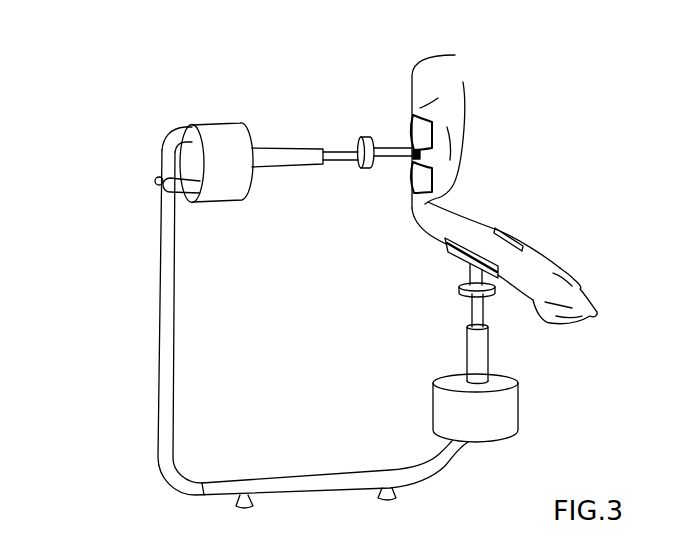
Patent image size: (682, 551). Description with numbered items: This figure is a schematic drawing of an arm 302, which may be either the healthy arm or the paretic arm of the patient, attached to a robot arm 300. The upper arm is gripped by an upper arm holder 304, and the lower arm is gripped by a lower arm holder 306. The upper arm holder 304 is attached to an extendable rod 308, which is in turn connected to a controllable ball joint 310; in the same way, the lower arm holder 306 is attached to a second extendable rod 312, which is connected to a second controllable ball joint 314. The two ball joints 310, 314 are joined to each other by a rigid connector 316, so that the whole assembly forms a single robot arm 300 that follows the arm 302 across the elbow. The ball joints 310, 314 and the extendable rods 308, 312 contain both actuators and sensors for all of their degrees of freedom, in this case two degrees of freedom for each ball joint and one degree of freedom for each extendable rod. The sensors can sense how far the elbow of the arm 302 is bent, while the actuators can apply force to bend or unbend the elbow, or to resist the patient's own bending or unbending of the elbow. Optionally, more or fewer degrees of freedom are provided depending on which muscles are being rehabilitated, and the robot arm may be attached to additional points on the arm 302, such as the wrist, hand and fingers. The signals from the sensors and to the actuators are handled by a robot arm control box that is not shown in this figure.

The robot arm 300 is at (130, 64).
The arm 302 is at (463, 218).
The upper arm holder 304 is at (412, 130).
The lower arm holder 306 is at (458, 257).
The extendable rod 308 is at (283, 170).
The controllable ball joint 310 is at (208, 122).
The extendable rod 312 is at (466, 350).
The controllable ball joint 314 is at (520, 408).
The rigid connector 316 is at (175, 323).